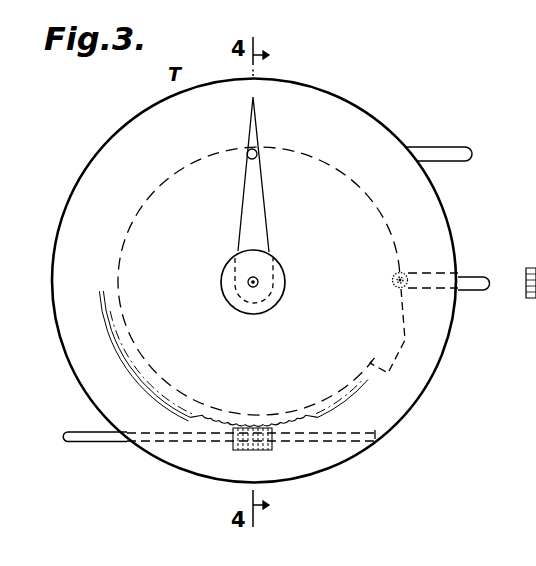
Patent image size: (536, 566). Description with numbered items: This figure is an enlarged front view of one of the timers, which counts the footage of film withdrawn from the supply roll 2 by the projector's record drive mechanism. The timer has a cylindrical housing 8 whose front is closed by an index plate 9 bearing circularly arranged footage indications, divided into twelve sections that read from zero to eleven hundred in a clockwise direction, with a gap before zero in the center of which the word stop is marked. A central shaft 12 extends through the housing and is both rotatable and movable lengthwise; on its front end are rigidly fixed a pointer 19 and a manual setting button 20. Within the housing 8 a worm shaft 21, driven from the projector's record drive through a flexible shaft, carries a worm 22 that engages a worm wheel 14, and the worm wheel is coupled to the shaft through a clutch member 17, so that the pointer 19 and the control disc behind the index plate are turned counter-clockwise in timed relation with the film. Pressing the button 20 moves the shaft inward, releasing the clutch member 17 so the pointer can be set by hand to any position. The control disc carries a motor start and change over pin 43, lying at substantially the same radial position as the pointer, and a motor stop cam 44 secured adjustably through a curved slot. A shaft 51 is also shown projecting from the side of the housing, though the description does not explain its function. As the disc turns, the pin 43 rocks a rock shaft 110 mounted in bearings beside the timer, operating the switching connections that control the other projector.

The housing 8 is at (368, 447).
The front index plate 9 is at (259, 281).
The central shaft 12 is at (253, 287).
The worm wheel 14 is at (212, 424).
The clutch member 17 is at (523, 274).
The pointer 19 is at (263, 203).
The manual setting button 20 is at (284, 275).
The worm shaft 21 is at (88, 441).
The worm 22 is at (273, 448).
The motor start and change over pin 43 is at (247, 159).
The motor stop cam 44 is at (397, 360).
The shaft 51 is at (463, 284).
The rock shaft 110 is at (442, 158).
The supply roll 2 is at (532, 459).